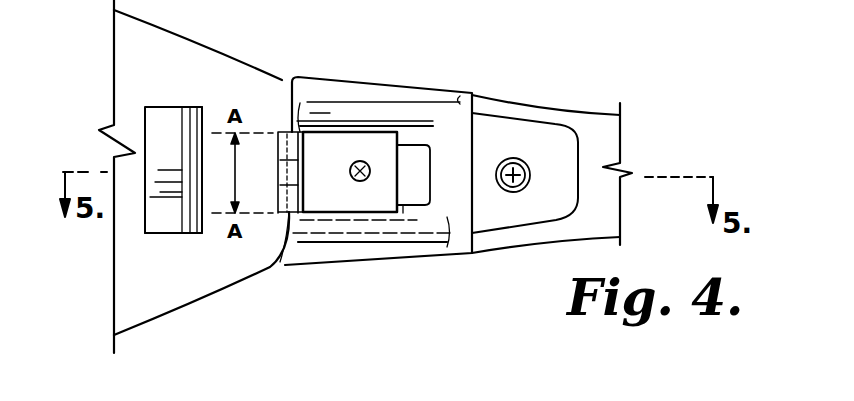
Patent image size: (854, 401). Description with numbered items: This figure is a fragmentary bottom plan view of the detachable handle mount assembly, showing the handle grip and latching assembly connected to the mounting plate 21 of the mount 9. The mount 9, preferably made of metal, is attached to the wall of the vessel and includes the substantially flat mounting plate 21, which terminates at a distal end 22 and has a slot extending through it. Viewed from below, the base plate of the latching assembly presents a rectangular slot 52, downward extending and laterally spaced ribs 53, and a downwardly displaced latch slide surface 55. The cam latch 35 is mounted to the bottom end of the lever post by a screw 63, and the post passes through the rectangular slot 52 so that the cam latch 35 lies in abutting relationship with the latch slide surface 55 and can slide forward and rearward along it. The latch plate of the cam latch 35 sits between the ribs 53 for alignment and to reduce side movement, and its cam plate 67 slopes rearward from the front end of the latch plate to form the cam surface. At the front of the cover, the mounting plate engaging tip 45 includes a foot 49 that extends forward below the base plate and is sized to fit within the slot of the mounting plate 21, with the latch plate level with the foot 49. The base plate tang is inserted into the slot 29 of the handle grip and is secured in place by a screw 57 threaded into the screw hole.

The mount 9 is at (127, 336).
The mounting plate 21 is at (200, 287).
The distal end 22 is at (298, 233).
The slot 29 is at (198, 110).
The cam latch 35 is at (350, 197).
The mounting plate engaging tip 45 is at (160, 223).
The foot 49 is at (160, 118).
The rectangular slot 52 is at (421, 189).
The ribs 53 is at (353, 103).
The latch slide surface 55 is at (403, 213).
The screw 57 is at (518, 162).
The screw 63 is at (363, 162).
The cam plate 67 is at (274, 160).